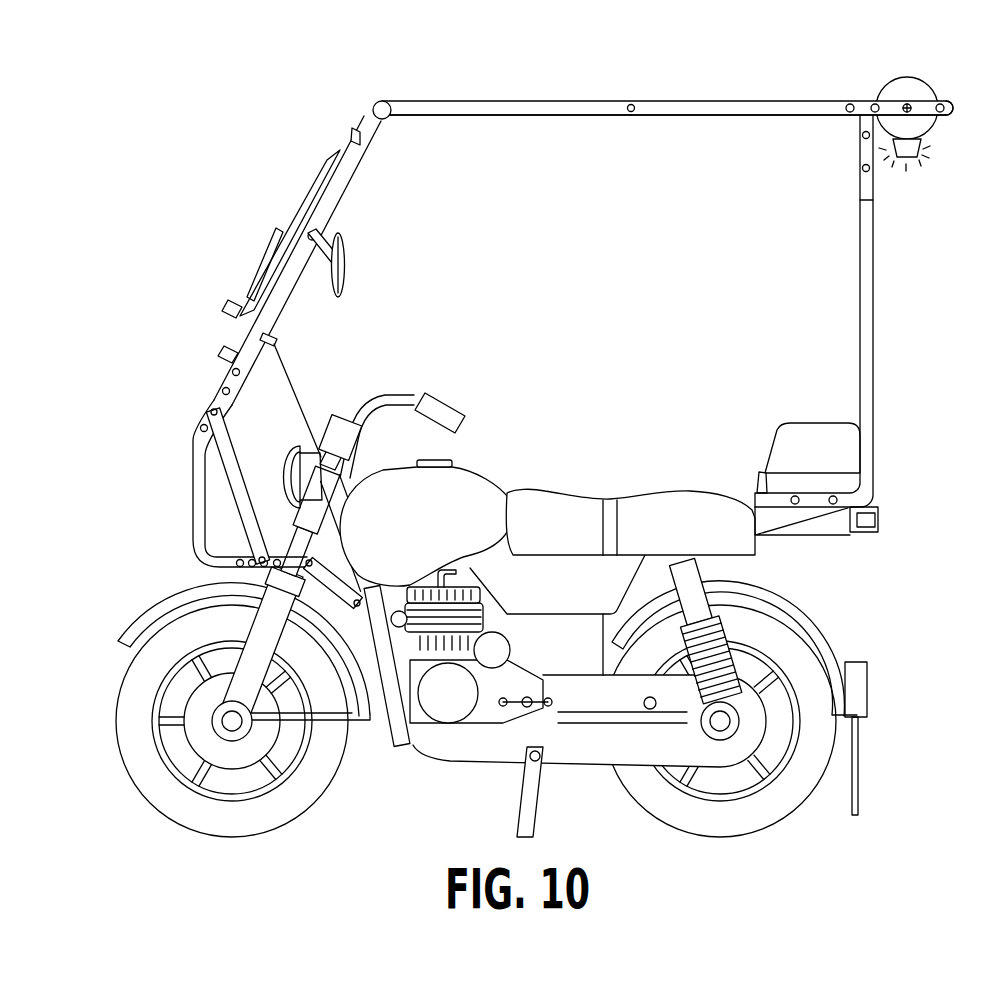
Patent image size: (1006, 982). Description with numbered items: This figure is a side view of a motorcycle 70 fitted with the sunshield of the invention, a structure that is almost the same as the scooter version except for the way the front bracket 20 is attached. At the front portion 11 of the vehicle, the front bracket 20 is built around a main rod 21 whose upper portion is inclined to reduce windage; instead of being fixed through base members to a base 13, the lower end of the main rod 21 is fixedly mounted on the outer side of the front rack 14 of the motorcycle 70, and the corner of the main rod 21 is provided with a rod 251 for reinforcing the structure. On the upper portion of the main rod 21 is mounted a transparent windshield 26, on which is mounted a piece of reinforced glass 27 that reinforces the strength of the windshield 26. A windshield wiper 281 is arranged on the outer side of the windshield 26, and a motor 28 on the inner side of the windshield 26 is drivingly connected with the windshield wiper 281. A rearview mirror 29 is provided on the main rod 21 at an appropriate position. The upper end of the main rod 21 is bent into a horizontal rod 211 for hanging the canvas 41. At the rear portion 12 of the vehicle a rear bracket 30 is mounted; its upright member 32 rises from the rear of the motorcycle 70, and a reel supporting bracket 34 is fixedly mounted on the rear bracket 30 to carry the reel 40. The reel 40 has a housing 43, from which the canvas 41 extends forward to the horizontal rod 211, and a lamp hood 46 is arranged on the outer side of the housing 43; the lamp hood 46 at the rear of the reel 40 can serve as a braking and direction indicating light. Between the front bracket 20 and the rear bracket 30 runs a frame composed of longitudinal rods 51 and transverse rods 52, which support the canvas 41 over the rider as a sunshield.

The front portion 11 is at (342, 425).
The rear portion 12 is at (828, 528).
The base 13 is at (762, 496).
The front rack 14 is at (407, 745).
The front bracket 20 is at (226, 341).
The main rod 21 is at (195, 516).
The rod 251 is at (232, 470).
The transparent windshield 26 is at (348, 146).
The reinforced glass 27 is at (335, 157).
The windshield wiper 281 is at (272, 243).
The motor 28 is at (280, 330).
The rearview mirror 29 is at (346, 268).
The rear bracket 30 is at (876, 291).
The rear post 32 is at (870, 360).
The reel supporting bracket 34 is at (935, 106).
The reel 40 is at (924, 84).
The canvas 41 is at (438, 100).
The housing 43 is at (900, 88).
The lamp hood 46 is at (912, 150).
The longitudinal rod 51 is at (522, 108).
The transverse rod 52 is at (632, 112).
The motorcycle 70 is at (598, 494).
The horizontal rod 211 is at (386, 118).